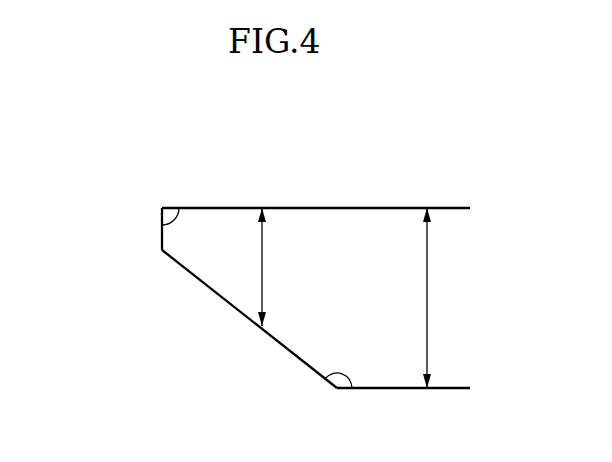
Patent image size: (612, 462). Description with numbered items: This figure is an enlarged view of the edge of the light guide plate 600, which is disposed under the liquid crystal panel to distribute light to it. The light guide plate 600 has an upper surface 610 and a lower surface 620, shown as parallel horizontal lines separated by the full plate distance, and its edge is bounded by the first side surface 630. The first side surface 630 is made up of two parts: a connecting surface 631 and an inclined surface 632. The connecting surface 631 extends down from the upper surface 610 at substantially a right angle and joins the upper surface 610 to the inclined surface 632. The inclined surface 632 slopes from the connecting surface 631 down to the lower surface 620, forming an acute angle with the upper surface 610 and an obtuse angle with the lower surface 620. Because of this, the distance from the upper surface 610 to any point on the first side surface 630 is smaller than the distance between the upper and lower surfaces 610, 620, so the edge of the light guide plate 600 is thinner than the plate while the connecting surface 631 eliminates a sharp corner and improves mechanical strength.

The light guide plate 600 is at (280, 117).
The upper surface 610 is at (325, 208).
The lower surface 620 is at (405, 388).
The first side surface 630 is at (206, 298).
The connecting surface 631 is at (162, 233).
The inclined surface 632 is at (251, 320).